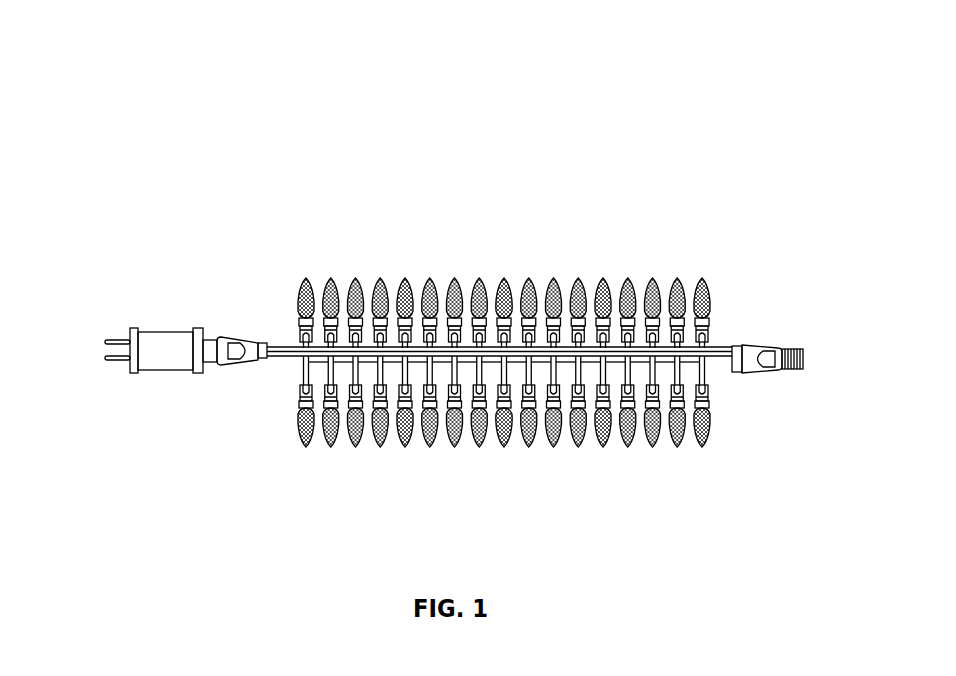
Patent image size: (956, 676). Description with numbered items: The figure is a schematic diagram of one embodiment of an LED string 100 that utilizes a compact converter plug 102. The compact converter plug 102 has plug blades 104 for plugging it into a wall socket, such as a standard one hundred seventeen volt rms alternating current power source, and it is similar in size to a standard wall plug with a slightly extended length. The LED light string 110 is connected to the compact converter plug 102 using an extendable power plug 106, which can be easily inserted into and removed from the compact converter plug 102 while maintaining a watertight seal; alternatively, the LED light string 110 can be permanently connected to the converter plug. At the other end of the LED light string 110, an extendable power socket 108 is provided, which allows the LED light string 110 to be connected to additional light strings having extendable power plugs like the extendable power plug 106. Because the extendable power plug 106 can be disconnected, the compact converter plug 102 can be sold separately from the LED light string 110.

The LED string 100 is at (500, 153).
The compact converter plug 102 is at (178, 287).
The plug blades 104 is at (113, 368).
The extendable power plug 106 is at (235, 366).
The extendable power socket 108 is at (765, 373).
The LED light string 110 is at (713, 277).